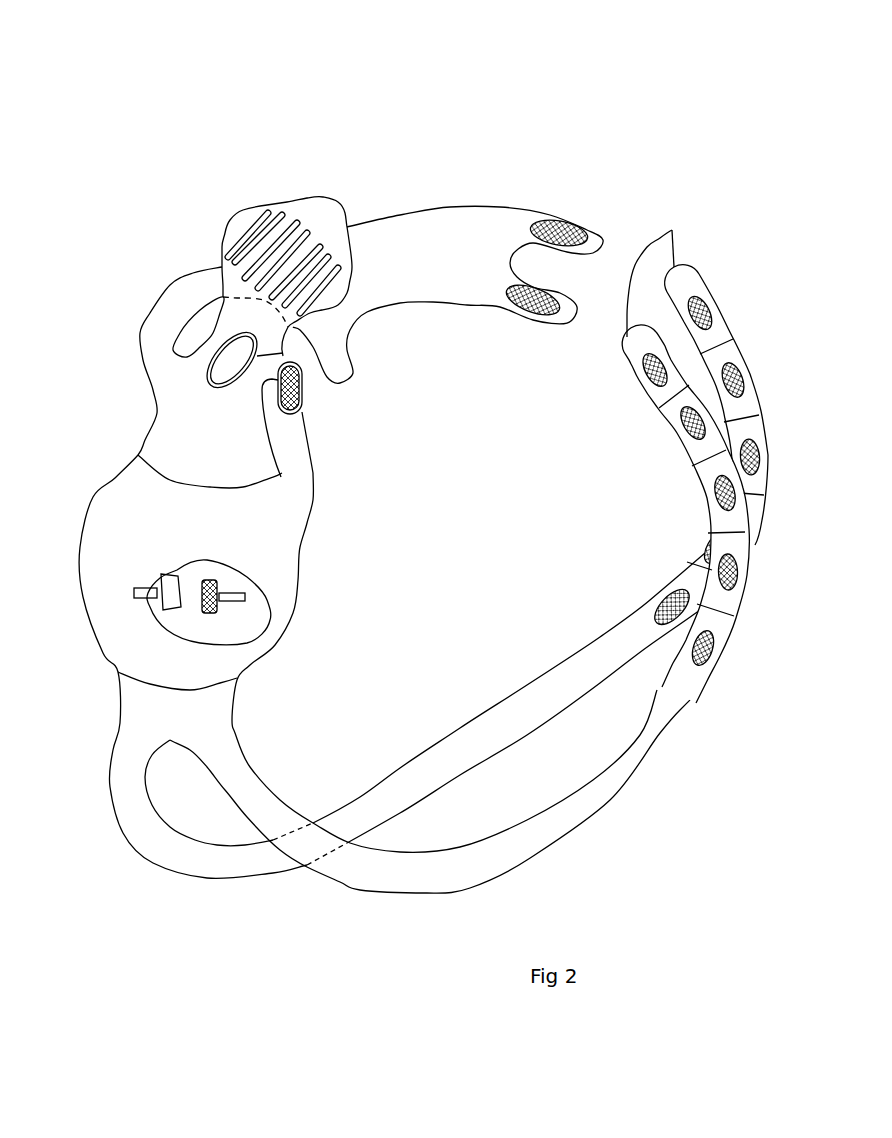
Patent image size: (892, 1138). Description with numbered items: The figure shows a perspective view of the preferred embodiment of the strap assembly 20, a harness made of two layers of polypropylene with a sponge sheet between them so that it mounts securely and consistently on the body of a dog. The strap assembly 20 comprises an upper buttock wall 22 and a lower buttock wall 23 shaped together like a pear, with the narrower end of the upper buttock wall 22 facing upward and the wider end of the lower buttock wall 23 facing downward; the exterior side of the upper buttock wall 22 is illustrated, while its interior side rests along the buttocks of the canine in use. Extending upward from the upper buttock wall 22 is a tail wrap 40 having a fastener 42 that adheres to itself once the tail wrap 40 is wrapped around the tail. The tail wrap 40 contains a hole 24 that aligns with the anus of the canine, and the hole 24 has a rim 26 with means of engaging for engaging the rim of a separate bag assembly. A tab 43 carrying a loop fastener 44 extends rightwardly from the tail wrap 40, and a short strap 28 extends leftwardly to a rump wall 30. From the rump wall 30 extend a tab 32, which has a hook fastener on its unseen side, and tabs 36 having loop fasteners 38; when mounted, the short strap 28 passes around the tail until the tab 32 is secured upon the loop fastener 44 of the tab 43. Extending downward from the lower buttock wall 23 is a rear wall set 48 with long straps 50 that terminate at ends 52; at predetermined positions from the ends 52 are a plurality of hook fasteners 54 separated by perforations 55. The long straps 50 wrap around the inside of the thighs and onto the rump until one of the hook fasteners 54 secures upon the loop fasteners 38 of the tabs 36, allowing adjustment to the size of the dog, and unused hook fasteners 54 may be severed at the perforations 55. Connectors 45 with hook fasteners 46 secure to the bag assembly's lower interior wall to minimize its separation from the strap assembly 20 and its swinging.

The strap assembly 20 is at (622, 152).
The upper buttock wall 22 is at (194, 449).
The lower buttock wall 23 is at (178, 536).
The hole 24 is at (220, 368).
The rim 26 is at (312, 385).
The short strap 28 is at (172, 293).
The rump wall 30 is at (428, 243).
The tab 32 is at (348, 350).
The tabs 36 is at (603, 237).
The loop fasteners 38 is at (560, 225).
The tail wrap 40 is at (330, 203).
The fastener 42 is at (242, 230).
The tab 43 is at (308, 450).
The loop fastener 44 is at (300, 413).
The connectors 45 is at (233, 597).
The hook fasteners 46 is at (217, 584).
The rear wall set 48 is at (170, 712).
The long straps 50 is at (567, 677).
The ends 52 is at (676, 229).
The hook fasteners 54 is at (707, 297).
The perforations 55 is at (738, 348).